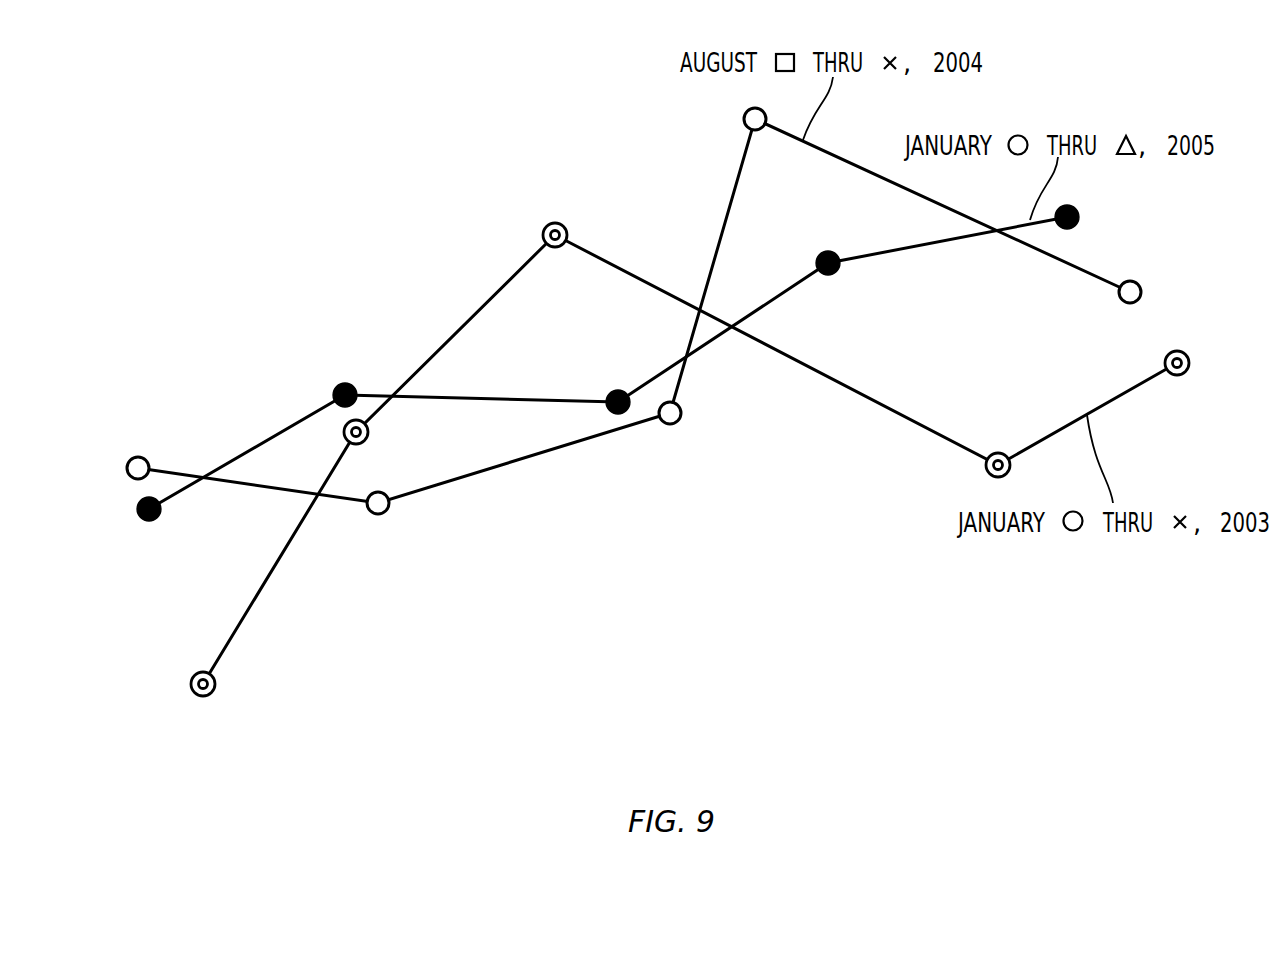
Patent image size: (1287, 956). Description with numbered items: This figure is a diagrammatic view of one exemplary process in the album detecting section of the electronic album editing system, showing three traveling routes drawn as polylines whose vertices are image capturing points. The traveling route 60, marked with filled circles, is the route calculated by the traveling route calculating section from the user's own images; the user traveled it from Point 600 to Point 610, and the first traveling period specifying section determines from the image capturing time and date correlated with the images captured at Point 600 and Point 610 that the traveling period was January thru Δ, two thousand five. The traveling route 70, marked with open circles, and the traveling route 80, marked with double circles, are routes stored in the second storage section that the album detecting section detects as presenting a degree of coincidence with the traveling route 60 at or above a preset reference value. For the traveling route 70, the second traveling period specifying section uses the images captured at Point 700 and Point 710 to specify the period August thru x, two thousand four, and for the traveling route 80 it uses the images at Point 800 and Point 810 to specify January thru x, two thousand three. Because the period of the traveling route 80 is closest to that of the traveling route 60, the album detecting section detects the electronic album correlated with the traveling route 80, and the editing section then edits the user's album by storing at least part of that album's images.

The traveling route 60 is at (270, 438).
The traveling route 70 is at (523, 458).
The traveling route 80 is at (263, 590).
The point 600 is at (153, 521).
The point 610 is at (1080, 215).
The point 700 is at (133, 458).
The point 710 is at (1143, 292).
The point 800 is at (207, 697).
The point 810 is at (1190, 362).